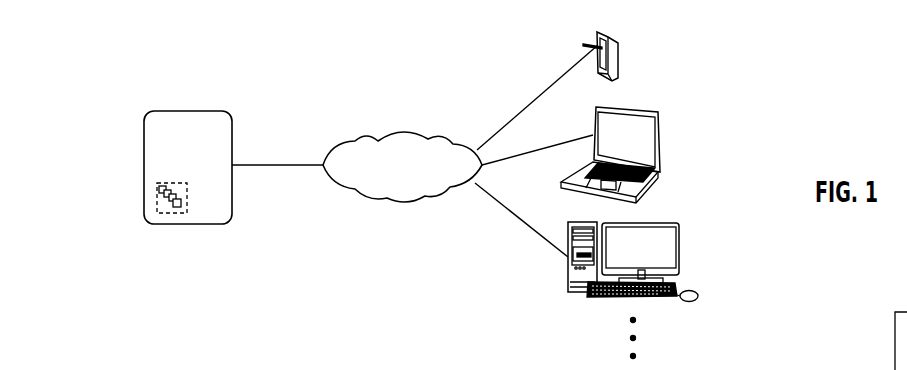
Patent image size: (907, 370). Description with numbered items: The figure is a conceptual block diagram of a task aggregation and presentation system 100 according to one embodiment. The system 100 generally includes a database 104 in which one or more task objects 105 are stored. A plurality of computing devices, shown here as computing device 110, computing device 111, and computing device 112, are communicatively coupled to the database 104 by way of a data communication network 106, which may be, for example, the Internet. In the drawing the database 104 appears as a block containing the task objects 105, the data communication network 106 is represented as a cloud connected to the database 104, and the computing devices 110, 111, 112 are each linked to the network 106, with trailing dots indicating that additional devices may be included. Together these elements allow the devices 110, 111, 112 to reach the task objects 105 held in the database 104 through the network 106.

The task aggregation and presentation system 100 is at (697, 48).
The database 104 is at (187, 110).
The task objects 105 is at (160, 189).
The data communication network 106 is at (403, 133).
The computing device 110 is at (620, 60).
The computing device 111 is at (663, 142).
The computing device 112 is at (682, 248).